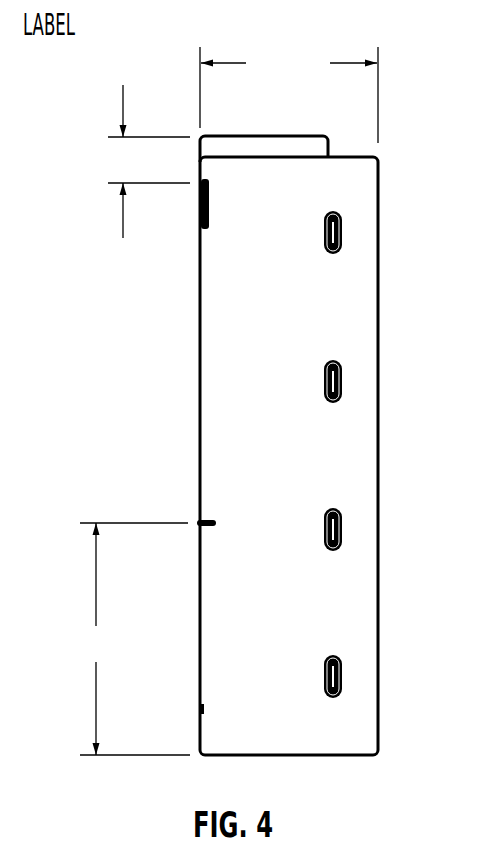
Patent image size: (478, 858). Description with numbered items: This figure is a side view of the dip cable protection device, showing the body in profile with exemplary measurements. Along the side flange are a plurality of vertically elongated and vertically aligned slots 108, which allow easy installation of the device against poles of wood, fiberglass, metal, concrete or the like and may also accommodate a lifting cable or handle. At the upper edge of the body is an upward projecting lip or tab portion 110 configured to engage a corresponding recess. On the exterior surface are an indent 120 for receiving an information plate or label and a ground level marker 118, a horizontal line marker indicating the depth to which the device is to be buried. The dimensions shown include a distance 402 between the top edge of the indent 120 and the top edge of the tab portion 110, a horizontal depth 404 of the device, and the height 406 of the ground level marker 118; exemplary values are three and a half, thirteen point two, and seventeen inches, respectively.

The slots 108 is at (348, 233).
The tab portion 110 is at (338, 133).
The ground level marker 118 is at (197, 520).
The indent 120 is at (188, 219).
The distance 402 is at (123, 238).
The horizontal depth 404 is at (300, 82).
The height 406 is at (109, 657).